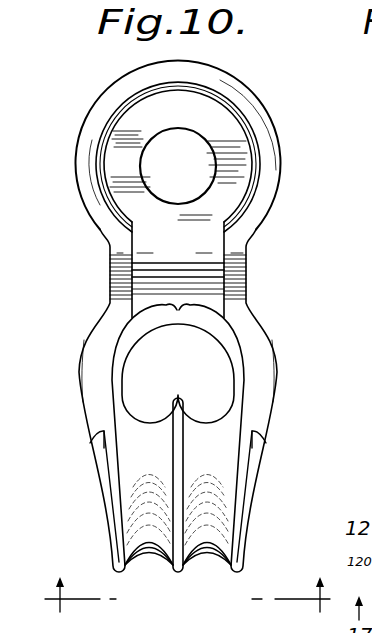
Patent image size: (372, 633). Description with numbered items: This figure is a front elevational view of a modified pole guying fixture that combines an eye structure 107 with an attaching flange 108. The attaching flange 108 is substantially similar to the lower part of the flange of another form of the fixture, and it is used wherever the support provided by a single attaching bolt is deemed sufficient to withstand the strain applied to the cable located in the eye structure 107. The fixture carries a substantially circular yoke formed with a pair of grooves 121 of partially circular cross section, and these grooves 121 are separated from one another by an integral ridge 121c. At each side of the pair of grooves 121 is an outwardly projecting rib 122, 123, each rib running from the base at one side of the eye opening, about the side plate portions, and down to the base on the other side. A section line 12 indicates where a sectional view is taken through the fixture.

The section line 12- 12 is at (190, 580).
The eye structure 107 is at (262, 479).
The attaching flange 108 is at (240, 168).
The grooves 121 is at (124, 483).
The integral ridge 121c is at (210, 476).
The outwardly projecting rib 122 is at (119, 546).
The outwardly projecting rib 123 is at (237, 543).